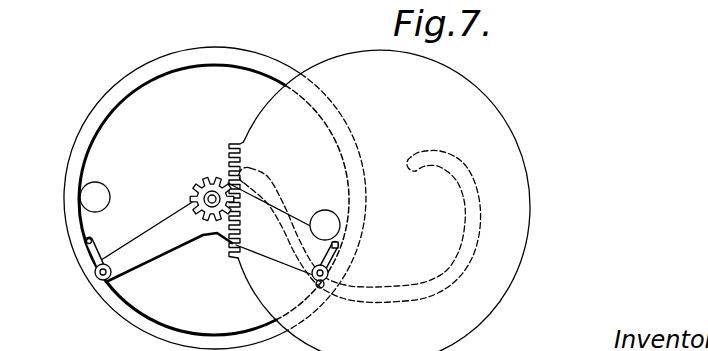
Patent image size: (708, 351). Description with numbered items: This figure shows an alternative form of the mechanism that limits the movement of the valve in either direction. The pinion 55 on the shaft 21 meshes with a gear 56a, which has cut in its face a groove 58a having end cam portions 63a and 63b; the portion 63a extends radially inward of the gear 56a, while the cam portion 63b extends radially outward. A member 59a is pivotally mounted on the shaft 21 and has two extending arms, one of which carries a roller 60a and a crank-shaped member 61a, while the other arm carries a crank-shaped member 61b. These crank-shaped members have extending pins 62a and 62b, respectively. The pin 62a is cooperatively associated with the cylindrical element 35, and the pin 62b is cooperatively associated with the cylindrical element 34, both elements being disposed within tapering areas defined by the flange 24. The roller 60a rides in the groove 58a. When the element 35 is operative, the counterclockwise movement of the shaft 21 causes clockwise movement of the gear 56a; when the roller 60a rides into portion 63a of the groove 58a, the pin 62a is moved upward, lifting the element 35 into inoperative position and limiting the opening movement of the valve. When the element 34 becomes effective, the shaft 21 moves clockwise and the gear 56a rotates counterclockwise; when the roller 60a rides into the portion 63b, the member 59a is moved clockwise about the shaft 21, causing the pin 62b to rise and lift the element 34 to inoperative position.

The flange 24 is at (93, 110).
The cylindrical element 34 is at (88, 198).
The pinion gear 55 is at (211, 190).
The shaft 21 is at (190, 205).
The member 59a is at (167, 262).
The pin 62b is at (85, 242).
The crank-shaped member 61b is at (96, 267).
The cam portion 63b is at (264, 178).
The cam portion 63a is at (447, 153).
The gear 56a is at (529, 187).
The groove 58a is at (480, 284).
The cylindrical element 35 is at (340, 220).
The pin 62a is at (341, 245).
The crank-shaped member 61a is at (329, 269).
The roller 60a is at (323, 289).